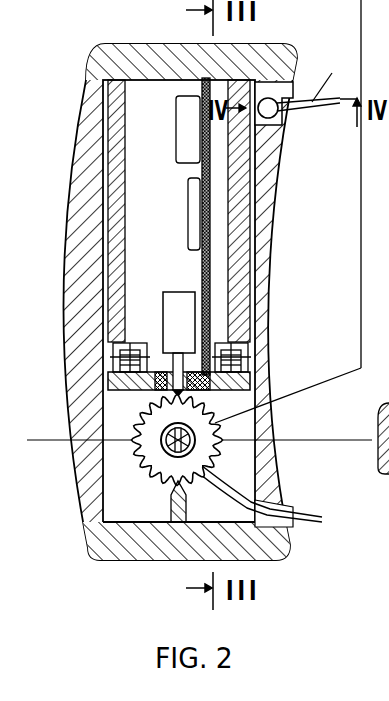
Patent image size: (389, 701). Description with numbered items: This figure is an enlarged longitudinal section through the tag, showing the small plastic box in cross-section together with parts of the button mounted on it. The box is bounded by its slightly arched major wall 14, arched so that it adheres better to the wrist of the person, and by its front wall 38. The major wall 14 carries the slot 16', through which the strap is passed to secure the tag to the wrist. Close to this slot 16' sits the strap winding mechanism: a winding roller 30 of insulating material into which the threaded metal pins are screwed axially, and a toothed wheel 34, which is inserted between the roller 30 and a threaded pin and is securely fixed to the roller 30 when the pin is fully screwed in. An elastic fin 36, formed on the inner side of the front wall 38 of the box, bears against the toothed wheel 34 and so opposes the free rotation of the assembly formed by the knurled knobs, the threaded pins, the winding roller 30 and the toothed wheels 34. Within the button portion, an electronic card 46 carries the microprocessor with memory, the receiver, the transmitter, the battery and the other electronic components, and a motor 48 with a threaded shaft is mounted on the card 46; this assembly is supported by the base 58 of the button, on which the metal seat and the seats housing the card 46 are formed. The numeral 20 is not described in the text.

The major wall 14 is at (262, 237).
The slot 16' is at (276, 297).
The cable channel 20 is at (322, 529).
The winding roller 30 is at (302, 381).
The toothed wheel 34 is at (258, 437).
The elastic fin 36 is at (366, 591).
The front wall 38 is at (128, 562).
The electronic card 46 is at (208, 173).
The motor 48 is at (178, 328).
The base 58 is at (108, 390).